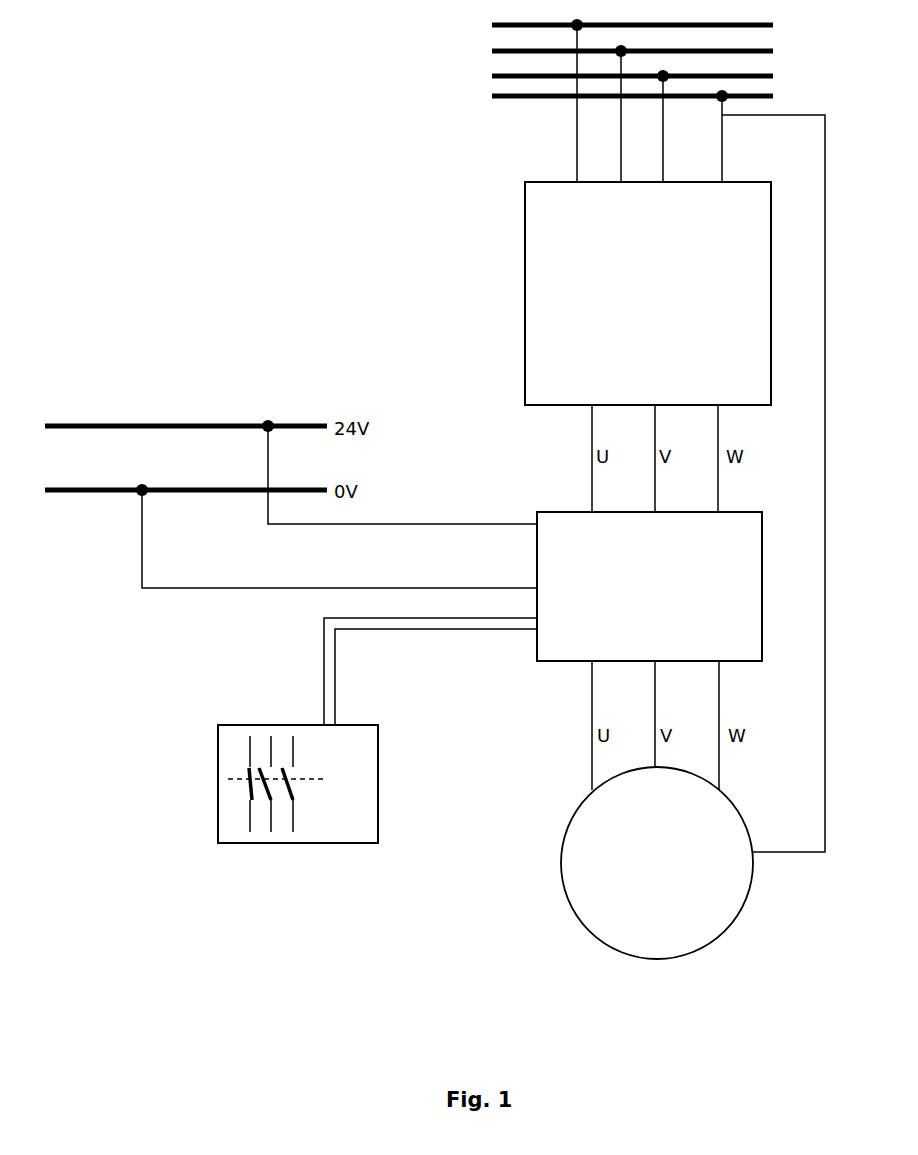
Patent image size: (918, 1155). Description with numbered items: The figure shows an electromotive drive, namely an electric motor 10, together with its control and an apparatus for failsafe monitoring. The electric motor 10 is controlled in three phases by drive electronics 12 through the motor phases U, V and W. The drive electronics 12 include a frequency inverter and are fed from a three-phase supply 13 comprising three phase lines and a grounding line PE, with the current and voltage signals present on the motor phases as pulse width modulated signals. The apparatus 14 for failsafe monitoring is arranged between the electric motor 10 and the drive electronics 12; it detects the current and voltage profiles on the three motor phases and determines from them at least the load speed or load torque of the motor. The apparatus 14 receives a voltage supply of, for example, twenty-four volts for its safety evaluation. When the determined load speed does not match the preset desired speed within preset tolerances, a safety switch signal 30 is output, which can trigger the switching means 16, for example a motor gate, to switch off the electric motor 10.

The electric motor 10 is at (657, 863).
The drive electronics 12 is at (648, 293).
The three-phase supply network 13 is at (432, 52).
The apparatus for failsafe monitoring 14 is at (649, 586).
The switching means 16 is at (298, 784).
The safety switch signal 30 is at (442, 618).